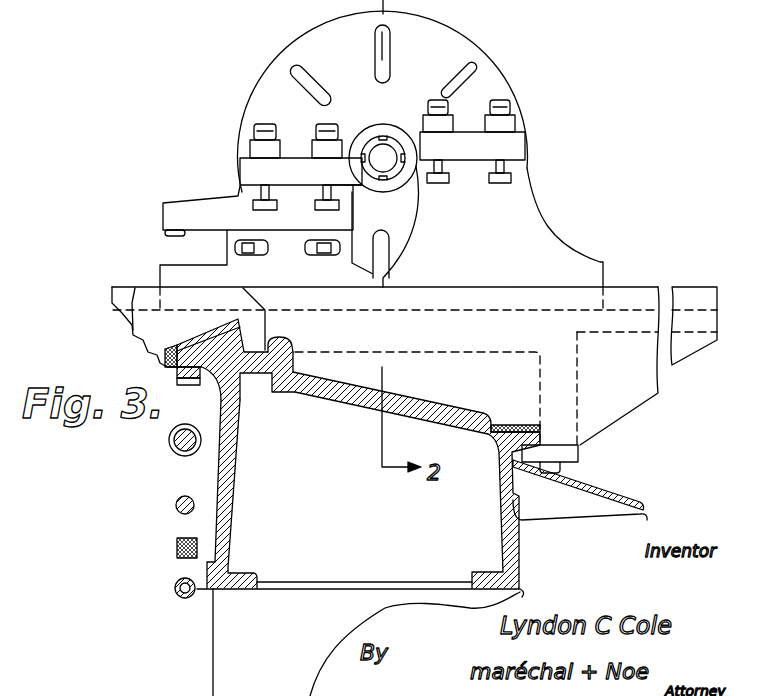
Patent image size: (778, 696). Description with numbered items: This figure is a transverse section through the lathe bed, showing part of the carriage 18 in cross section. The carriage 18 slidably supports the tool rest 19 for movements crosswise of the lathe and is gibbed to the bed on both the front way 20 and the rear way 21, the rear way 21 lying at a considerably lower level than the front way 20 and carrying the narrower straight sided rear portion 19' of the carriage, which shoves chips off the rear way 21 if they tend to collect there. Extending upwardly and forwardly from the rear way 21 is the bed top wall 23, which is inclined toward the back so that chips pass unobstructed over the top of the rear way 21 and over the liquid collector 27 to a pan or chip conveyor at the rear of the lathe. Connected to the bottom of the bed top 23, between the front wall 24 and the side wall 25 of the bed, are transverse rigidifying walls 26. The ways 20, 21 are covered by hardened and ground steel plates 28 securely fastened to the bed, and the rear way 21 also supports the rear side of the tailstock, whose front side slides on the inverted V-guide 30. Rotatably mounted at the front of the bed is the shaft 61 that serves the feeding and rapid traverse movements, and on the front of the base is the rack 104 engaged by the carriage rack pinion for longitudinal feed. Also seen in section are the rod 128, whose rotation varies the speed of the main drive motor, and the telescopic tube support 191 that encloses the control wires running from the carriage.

The carriage 18 is at (414, 366).
The tool rest 19 is at (258, 198).
The straight sided rear portion 19' is at (565, 227).
The front way 20 is at (217, 331).
The rear way 21 is at (526, 443).
The bed top wall 23 is at (420, 413).
The front wall 24 is at (230, 493).
The side wall 25 is at (503, 537).
The transverse rigidifying wall 26 is at (364, 542).
The liquid collector 27 is at (594, 495).
The steel plate 28 is at (190, 342).
The inverted V-guide 30 is at (295, 344).
The shaft 61 is at (180, 450).
The rack 104 is at (194, 383).
The rod 128 is at (178, 501).
The telescopic tube support 191 is at (176, 583).